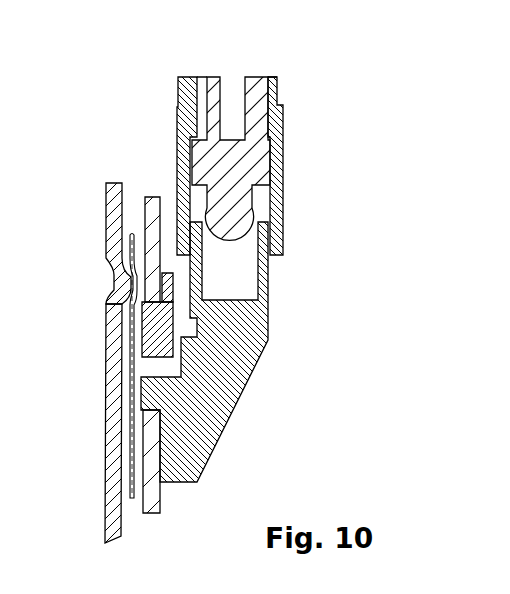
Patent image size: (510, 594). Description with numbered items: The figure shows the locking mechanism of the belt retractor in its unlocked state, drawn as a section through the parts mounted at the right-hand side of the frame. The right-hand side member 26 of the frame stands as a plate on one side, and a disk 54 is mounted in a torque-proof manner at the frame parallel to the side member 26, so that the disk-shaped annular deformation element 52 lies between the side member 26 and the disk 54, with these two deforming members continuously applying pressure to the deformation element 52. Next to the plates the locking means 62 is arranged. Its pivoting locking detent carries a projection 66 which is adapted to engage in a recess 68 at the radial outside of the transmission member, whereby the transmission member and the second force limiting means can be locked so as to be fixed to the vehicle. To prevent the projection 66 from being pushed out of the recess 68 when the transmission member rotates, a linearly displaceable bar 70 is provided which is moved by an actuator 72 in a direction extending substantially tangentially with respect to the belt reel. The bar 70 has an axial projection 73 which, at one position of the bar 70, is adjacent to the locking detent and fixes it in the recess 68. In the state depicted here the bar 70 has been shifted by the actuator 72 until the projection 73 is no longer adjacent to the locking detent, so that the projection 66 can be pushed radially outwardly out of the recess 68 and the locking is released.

The locking means 62 is at (298, 76).
The actuator 72 is at (284, 151).
The bar 70 is at (218, 381).
The right-hand side member 26 is at (110, 209).
The deformation element 52 is at (124, 487).
The axial projection 73 is at (138, 394).
The projection 66 is at (148, 328).
The recess 68 is at (150, 364).
The disk 54 is at (153, 500).